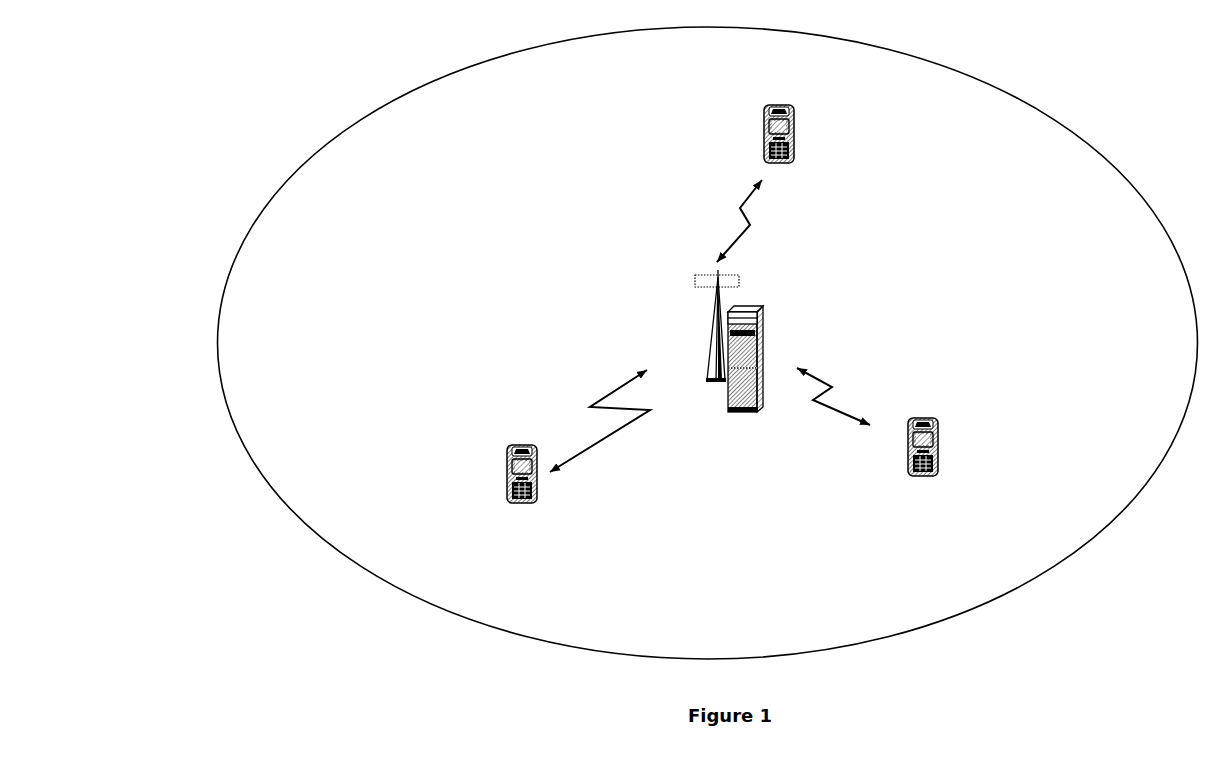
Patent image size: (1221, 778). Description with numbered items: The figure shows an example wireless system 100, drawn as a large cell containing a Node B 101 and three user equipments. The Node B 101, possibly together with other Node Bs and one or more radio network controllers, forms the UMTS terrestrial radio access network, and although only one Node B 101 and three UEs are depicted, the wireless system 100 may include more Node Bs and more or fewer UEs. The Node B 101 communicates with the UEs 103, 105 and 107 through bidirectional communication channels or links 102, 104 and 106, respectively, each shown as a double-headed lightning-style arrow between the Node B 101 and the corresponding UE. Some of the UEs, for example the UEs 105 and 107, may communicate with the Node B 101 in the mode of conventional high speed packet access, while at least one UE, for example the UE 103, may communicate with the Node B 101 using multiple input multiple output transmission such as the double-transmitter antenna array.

The wireless system 100 is at (962, 113).
The Node B 101 is at (697, 369).
The bidirectional communication channel or link 102 is at (588, 395).
The user equipment (UE) 103 is at (493, 473).
The bidirectional communication channel or link 104 is at (832, 375).
The user equipment (UE) 105 is at (950, 452).
The bidirectional communication channel or link 106 is at (733, 222).
The user equipment (UE) 107 is at (757, 127).